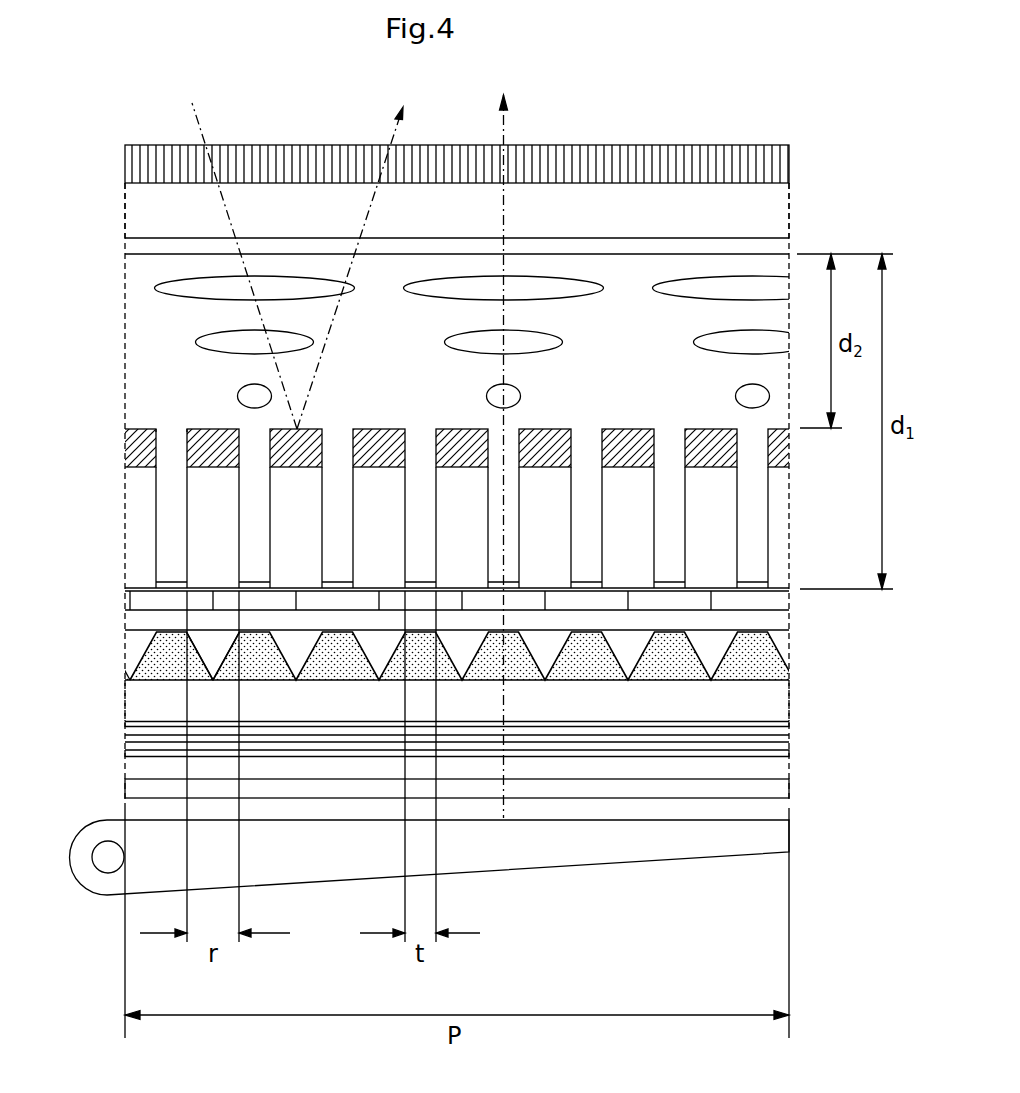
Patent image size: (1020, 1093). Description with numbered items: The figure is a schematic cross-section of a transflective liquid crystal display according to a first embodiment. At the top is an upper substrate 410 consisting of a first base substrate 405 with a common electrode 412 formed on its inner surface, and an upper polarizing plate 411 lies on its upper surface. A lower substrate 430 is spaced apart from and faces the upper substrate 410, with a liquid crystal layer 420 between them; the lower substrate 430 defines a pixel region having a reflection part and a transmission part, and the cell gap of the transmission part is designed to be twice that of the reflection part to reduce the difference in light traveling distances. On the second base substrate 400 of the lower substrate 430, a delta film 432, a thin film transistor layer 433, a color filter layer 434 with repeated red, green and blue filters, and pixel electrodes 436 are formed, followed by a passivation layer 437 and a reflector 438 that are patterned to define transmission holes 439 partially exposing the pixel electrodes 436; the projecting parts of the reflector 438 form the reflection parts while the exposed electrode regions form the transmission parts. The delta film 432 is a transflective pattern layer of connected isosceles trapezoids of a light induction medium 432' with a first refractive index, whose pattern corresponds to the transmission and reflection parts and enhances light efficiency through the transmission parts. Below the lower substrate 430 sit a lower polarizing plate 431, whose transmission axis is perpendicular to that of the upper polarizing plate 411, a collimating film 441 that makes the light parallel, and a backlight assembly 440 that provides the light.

The second base substrate 400 is at (783, 698).
The first base substrate 405 is at (780, 210).
The upper substrate 410 is at (118, 185).
The upper polarizing plate 411 is at (778, 162).
The common electrode 412 is at (782, 244).
The liquid crystal layer 420 is at (118, 256).
The lower substrate 430 is at (118, 429).
The lower polarizing plate 431 is at (790, 738).
The delta film 432 is at (415, 677).
The light induction medium 432' is at (171, 677).
The thin film transistor layer 433 is at (786, 627).
The color filter layer 434 is at (786, 597).
The pixel electrode 436 is at (756, 583).
The passivation layer 437 is at (205, 528).
The reflector 438 is at (207, 462).
The transmission hole 439 is at (170, 432).
The backlight assembly 440 is at (68, 822).
The collimating film 441 is at (778, 787).